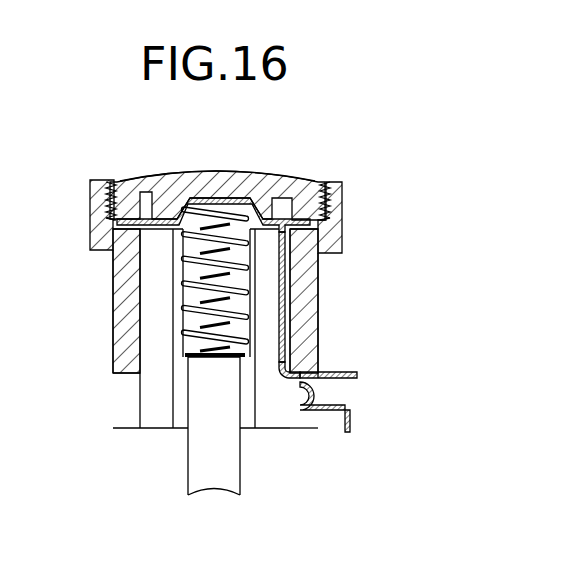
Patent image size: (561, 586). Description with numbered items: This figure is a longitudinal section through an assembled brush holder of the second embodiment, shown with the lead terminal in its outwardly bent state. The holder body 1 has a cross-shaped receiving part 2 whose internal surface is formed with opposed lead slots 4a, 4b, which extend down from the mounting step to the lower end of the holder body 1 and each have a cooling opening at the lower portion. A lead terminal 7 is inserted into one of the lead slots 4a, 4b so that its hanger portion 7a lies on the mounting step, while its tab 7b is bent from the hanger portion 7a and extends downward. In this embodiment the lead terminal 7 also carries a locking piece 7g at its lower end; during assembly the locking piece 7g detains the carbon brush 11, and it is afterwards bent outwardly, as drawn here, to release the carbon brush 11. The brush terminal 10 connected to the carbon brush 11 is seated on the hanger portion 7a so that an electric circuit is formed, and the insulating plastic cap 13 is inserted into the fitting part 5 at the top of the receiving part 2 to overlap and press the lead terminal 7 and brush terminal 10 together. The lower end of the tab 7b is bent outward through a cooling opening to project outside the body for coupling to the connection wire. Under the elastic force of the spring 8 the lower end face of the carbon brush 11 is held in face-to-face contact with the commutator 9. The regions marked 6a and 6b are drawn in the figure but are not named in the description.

The holder body 1 is at (123, 312).
The cross-shaped receiving part 2 is at (180, 397).
The lead slot 4a is at (158, 340).
The lead slot 4b is at (265, 327).
The fitting part 5 is at (108, 190).
The housing leg 6a is at (127, 397).
The housing leg 6b is at (302, 420).
The lead terminal 7 is at (300, 250).
The hanger portion 7a is at (135, 218).
The tab 7b is at (347, 378).
The locking piece 7g is at (352, 422).
The spring 8 is at (185, 260).
The commutator 9 is at (308, 368).
The brush terminal 10 is at (160, 192).
The carbon brush 11 is at (200, 468).
The plastic cap 13 is at (170, 167).